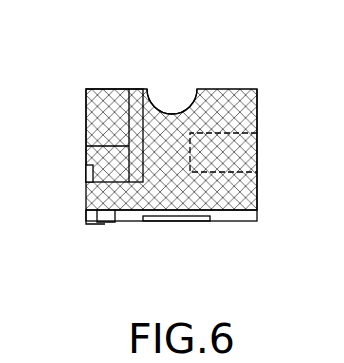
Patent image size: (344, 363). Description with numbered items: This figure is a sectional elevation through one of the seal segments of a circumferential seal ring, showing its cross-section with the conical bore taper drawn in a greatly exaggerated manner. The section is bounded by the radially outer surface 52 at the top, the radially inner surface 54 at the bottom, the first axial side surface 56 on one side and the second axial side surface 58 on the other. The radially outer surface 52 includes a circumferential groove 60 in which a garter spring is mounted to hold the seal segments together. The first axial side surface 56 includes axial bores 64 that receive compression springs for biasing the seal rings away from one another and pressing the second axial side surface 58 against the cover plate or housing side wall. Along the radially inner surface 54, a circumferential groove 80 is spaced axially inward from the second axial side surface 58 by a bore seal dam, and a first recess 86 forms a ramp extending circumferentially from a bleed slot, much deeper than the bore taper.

The radially outer surface 52 is at (236, 89).
The radially inner surface 54 is at (123, 222).
The first axial side surface 56 is at (257, 117).
The second axial side surface 58 is at (86, 137).
The circumferential groove 60 is at (172, 91).
The axial bores 64 is at (224, 172).
The circumferential groove 80 is at (98, 217).
The first recess 86 is at (173, 221).